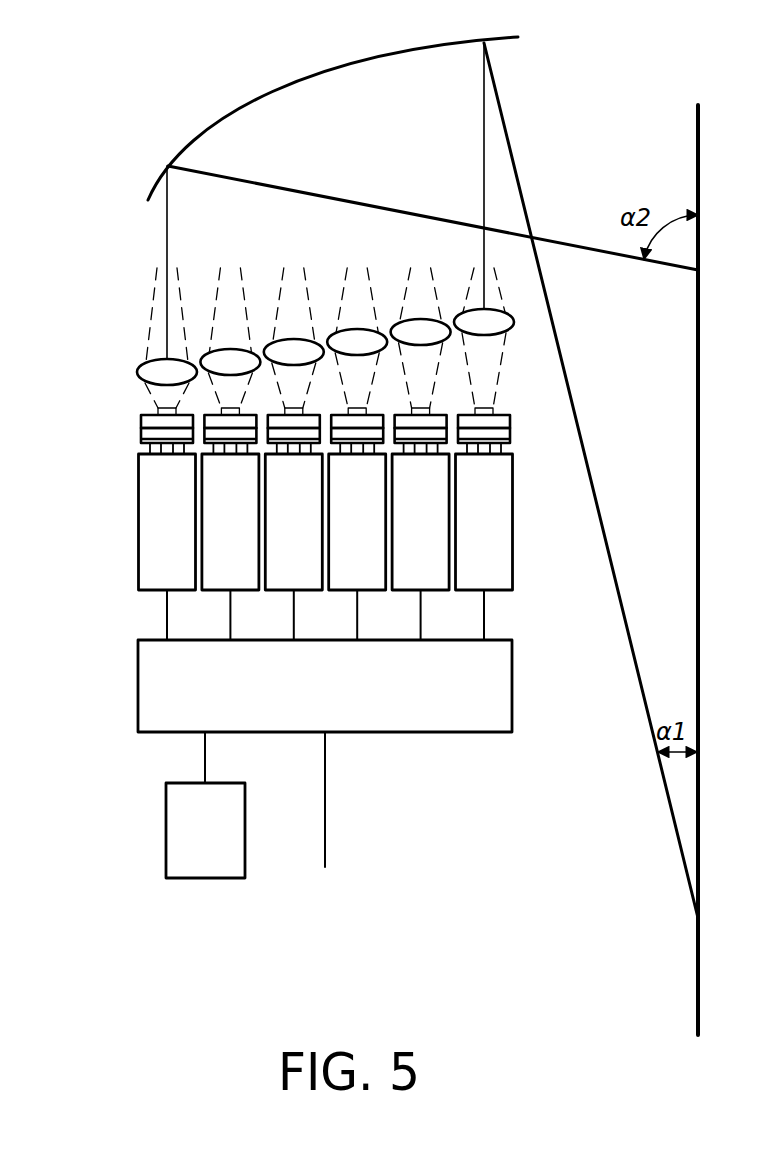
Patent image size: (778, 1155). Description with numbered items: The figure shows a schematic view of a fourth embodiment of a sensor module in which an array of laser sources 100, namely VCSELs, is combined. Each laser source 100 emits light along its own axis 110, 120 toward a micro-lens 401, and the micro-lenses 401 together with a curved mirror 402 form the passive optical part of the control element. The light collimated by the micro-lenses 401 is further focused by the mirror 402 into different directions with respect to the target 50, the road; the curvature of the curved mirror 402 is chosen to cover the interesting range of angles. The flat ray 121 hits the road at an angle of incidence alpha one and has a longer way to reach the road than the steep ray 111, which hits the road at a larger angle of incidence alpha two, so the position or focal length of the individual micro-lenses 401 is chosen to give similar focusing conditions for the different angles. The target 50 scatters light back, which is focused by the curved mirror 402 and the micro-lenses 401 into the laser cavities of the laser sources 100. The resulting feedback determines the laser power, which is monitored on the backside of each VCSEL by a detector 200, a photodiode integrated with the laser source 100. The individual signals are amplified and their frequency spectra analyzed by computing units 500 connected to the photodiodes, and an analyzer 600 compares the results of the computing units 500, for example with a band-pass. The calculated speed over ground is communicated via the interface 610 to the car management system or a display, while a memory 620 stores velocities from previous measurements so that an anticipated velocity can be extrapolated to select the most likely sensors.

The curved mirror 402 is at (310, 78).
The steep ray 111 is at (357, 201).
The optical axis of light source 120 is at (482, 177).
The optical axis of light source 110 is at (160, 263).
The micro-lens 401 is at (137, 374).
The laser source 100 is at (141, 424).
The detector 200 is at (141, 436).
The computing unit 500 is at (138, 520).
The analyzer 600 is at (348, 702).
The interface 610 is at (326, 800).
The memory 620 is at (227, 846).
The flat ray 121 is at (594, 485).
The target 50 is at (696, 978).